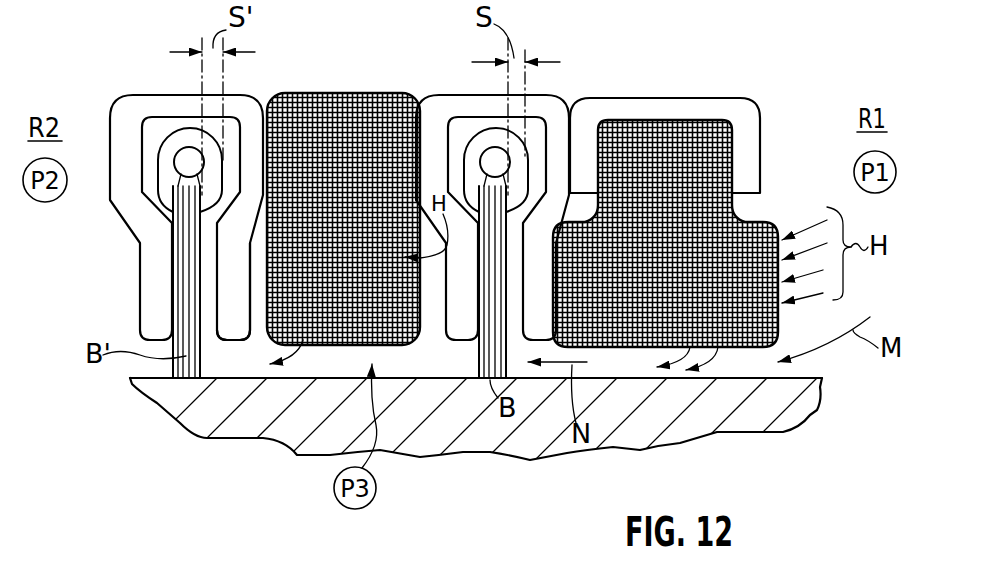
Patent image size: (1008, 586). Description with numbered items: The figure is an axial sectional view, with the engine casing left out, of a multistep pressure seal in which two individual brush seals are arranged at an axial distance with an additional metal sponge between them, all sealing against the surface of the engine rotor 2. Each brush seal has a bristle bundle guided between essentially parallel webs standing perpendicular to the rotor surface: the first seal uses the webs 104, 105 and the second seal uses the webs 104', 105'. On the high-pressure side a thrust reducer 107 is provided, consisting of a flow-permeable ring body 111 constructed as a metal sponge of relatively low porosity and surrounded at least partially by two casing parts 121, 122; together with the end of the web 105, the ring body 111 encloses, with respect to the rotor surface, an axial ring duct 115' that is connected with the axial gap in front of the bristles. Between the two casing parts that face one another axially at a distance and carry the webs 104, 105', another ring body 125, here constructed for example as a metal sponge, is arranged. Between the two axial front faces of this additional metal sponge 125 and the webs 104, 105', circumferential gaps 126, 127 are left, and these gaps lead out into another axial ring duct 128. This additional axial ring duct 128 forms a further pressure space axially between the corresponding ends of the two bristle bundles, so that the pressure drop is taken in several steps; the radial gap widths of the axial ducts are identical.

The engine rotor 2 is at (730, 417).
The web 104 is at (492, 299).
The web of second seal 104' is at (150, 217).
The web 105 is at (522, 308).
The web of second seal 105' is at (159, 309).
The thrust reducer 107 is at (677, 180).
The ring body 111 is at (648, 135).
The axial ring duct 115' is at (609, 395).
The casing part 121 is at (600, 113).
The casing part 122 is at (742, 112).
The additional ring body 125 is at (346, 108).
The circumferential gap 126 is at (440, 300).
The circumferential gap 127 is at (257, 258).
The additional axial ring duct 128 is at (332, 363).